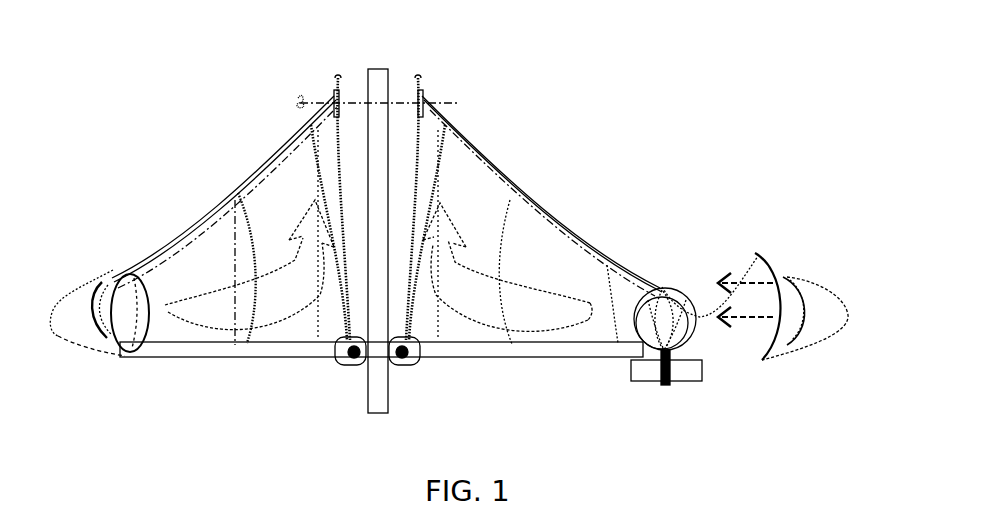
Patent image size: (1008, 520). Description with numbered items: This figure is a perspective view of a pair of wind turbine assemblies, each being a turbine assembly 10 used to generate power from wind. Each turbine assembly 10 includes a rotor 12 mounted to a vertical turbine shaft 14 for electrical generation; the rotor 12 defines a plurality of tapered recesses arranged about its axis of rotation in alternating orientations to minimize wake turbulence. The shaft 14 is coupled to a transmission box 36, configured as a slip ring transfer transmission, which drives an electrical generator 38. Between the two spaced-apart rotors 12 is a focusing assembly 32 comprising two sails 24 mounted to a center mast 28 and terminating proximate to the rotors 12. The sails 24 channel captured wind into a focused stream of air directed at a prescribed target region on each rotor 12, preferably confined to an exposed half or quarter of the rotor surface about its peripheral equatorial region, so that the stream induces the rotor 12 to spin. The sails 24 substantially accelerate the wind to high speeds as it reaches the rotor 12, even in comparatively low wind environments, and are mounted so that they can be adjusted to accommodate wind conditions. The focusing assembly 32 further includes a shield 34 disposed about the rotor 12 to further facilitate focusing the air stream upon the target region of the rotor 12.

The turbine assembly 10 is at (682, 84).
The rotor 12 is at (140, 256).
The vertical turbine shaft 14 is at (758, 256).
The sail 24 is at (508, 226).
The center mast 28 is at (376, 94).
The focusing assembly 32 is at (506, 104).
The shield 34 is at (63, 303).
The transmission box 36 is at (643, 378).
The electrical generator 38 is at (655, 380).